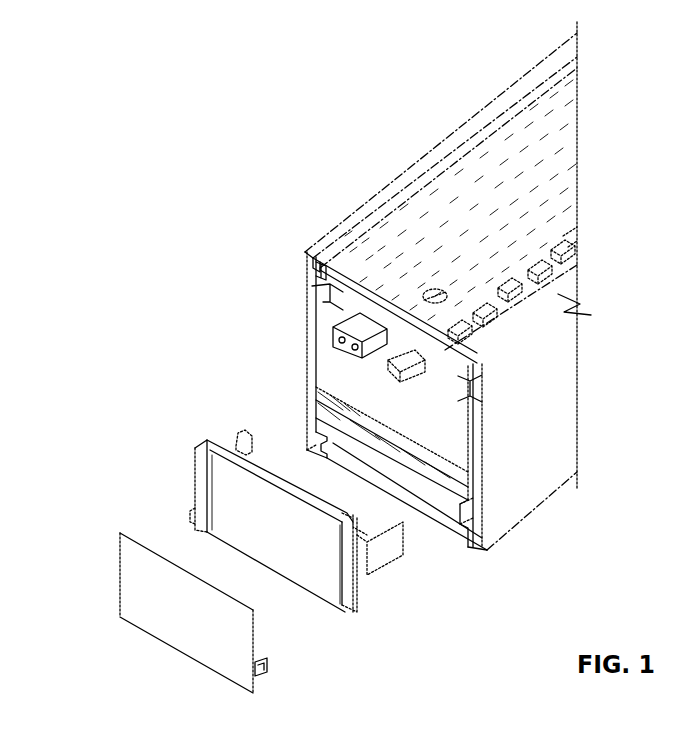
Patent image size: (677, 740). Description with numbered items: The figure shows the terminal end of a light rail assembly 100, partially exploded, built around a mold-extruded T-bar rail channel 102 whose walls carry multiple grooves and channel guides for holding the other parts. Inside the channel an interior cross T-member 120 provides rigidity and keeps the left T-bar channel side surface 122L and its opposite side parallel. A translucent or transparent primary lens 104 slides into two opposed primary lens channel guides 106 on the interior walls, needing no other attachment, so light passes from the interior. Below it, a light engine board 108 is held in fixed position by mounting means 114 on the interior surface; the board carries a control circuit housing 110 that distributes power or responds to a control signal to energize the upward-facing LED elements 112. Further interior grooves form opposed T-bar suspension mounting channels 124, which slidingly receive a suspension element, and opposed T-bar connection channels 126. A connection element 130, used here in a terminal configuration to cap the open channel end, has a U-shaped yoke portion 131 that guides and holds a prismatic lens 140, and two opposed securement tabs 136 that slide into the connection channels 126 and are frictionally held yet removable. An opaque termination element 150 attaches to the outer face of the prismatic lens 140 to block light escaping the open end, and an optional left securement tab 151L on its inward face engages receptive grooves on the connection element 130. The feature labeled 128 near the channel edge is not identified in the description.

The light rail assembly 100 is at (144, 169).
The T-bar rail channel 102 is at (488, 118).
The primary lens 104 is at (403, 242).
The primary lens channel guides 106 is at (315, 271).
The light engine board 108 is at (352, 362).
The control circuit housing 110 is at (348, 356).
The LED elements 112 is at (408, 371).
The mounting means 114 is at (437, 290).
The interior cross T-member 120 is at (457, 460).
The left T-bar channel side surface 122L is at (523, 457).
The T-bar suspension mounting channels 124 is at (337, 442).
The T-bar connection channels 126 is at (320, 308).
The front edge of top plate 128 is at (558, 282).
The connection element 130 is at (170, 305).
The U-shaped yoke portion 131 is at (203, 475).
The securement tabs 136 is at (237, 440).
The prismatic lens 140 is at (292, 533).
The termination element 150 is at (143, 592).
The left securement tab 151L is at (267, 668).